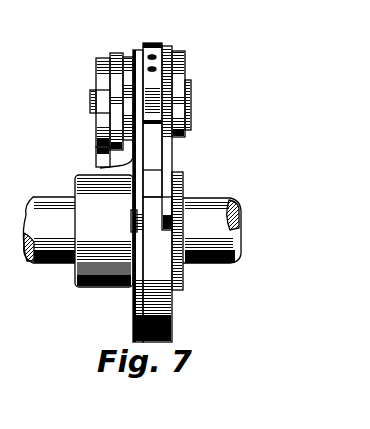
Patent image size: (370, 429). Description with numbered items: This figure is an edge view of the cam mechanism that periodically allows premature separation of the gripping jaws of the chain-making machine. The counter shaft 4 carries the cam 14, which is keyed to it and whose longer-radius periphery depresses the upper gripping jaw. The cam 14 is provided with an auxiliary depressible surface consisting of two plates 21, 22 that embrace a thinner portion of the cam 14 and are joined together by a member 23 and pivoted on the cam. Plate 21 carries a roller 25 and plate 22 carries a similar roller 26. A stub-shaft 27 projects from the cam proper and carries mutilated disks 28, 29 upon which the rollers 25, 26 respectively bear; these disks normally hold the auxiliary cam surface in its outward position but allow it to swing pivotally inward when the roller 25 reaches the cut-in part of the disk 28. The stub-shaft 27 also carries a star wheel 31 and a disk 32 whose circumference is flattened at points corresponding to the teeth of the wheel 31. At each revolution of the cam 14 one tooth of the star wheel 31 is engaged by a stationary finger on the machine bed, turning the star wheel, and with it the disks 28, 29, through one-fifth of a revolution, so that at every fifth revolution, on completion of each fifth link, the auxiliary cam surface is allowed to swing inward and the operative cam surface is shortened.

The counter shaft 4 is at (46, 265).
The cam 14 is at (155, 305).
The plate 21 is at (130, 170).
The plate 22 is at (166, 165).
The member 23 is at (153, 120).
The roller 25 is at (98, 166).
The roller 26 is at (183, 142).
The stub-shaft 27 is at (92, 110).
The mutilated disk 28 is at (127, 56).
The mutilated disk 29 is at (183, 52).
The star wheel 31 is at (100, 82).
The disk 32 is at (116, 52).